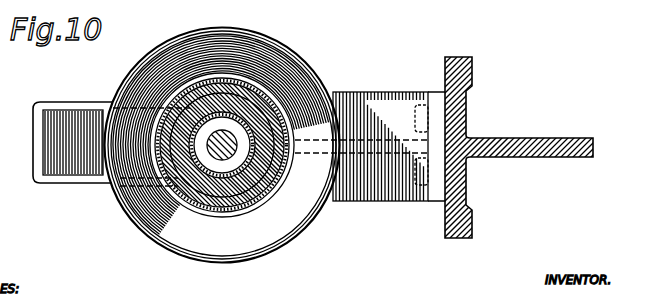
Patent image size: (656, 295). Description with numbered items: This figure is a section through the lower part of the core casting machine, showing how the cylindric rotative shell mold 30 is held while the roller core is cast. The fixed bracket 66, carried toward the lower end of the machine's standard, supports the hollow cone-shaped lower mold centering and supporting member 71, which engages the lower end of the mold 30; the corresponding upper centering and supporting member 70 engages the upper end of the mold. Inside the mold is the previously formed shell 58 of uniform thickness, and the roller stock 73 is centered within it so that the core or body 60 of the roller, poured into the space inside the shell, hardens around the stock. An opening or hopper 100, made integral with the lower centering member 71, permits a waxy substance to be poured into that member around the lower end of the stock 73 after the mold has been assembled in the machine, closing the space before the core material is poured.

The lower mold centering and supporting member 71 is at (288, 48).
The core or body 60 is at (467, 105).
The cylindric rotative shell mold 30 is at (168, 188).
The shell 58 is at (184, 192).
The upper mold centering and supporting member 70 is at (238, 185).
The roller stock 73 is at (218, 162).
The fixed bracket 66 is at (385, 200).
The opening or hopper 100 is at (65, 173).